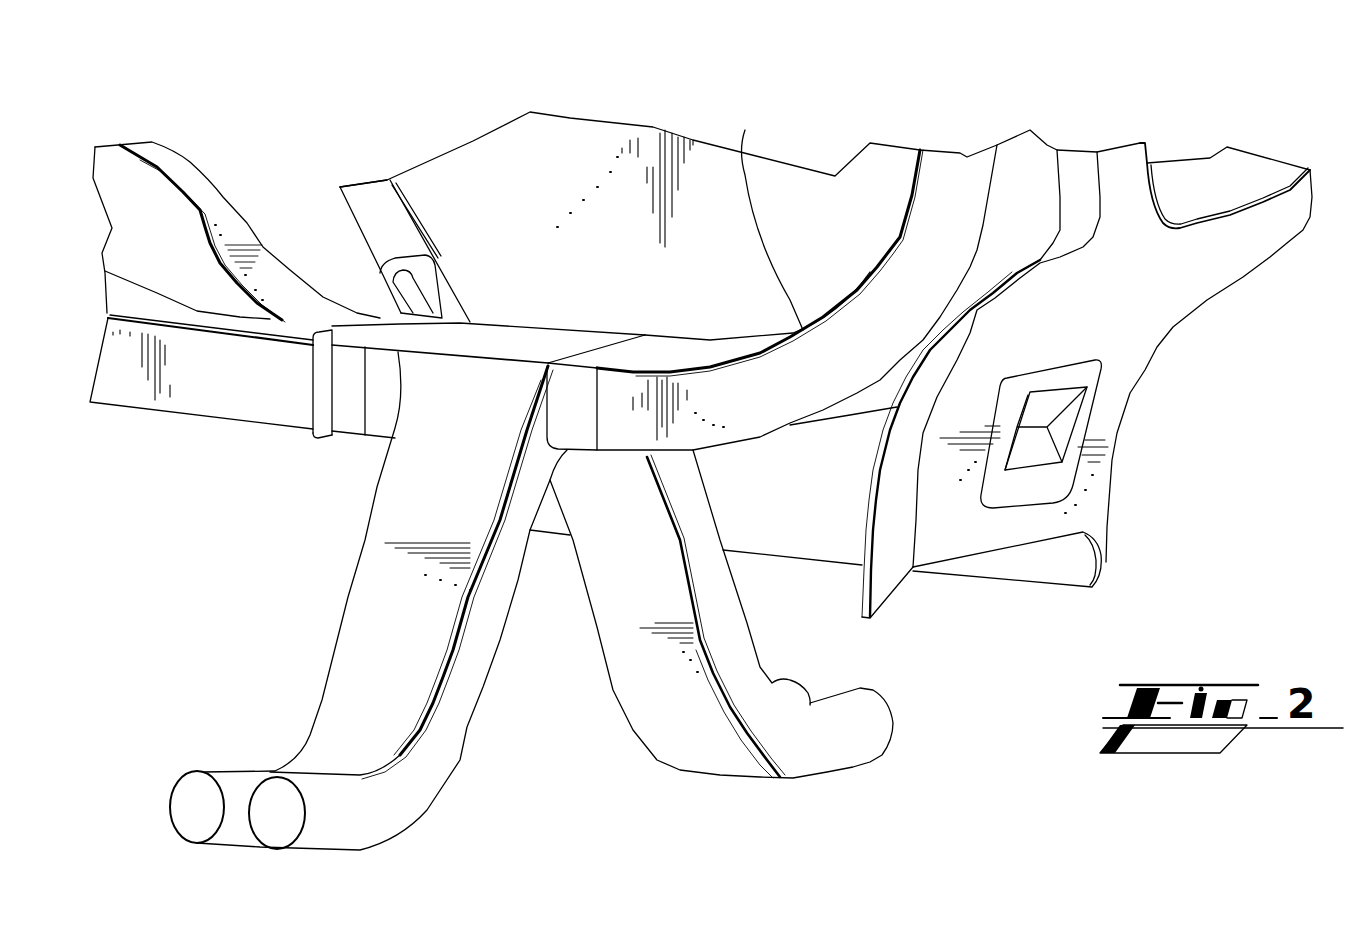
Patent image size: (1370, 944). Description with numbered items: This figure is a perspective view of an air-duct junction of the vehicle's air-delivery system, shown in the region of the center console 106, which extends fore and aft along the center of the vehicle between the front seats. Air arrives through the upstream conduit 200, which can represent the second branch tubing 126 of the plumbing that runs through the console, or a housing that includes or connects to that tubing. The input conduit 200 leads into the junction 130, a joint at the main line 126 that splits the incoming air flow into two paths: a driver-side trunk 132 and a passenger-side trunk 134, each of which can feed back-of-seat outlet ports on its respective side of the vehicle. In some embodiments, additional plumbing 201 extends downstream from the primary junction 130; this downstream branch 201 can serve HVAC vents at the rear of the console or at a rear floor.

The plumbing 201 is at (745, 130).
The center console 106 is at (1170, 410).
The upstream conduit 200 is at (407, 426).
The second branch tubing 126 is at (138, 437).
The junction 130 is at (355, 488).
The driver-side trunk 132 is at (320, 683).
The passenger-side trunk 134 is at (852, 770).